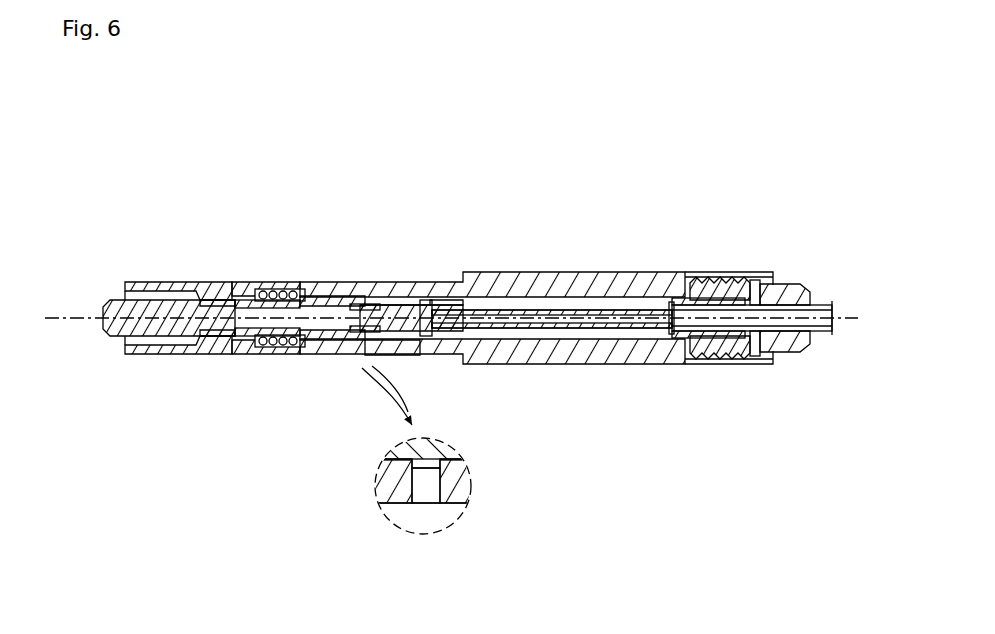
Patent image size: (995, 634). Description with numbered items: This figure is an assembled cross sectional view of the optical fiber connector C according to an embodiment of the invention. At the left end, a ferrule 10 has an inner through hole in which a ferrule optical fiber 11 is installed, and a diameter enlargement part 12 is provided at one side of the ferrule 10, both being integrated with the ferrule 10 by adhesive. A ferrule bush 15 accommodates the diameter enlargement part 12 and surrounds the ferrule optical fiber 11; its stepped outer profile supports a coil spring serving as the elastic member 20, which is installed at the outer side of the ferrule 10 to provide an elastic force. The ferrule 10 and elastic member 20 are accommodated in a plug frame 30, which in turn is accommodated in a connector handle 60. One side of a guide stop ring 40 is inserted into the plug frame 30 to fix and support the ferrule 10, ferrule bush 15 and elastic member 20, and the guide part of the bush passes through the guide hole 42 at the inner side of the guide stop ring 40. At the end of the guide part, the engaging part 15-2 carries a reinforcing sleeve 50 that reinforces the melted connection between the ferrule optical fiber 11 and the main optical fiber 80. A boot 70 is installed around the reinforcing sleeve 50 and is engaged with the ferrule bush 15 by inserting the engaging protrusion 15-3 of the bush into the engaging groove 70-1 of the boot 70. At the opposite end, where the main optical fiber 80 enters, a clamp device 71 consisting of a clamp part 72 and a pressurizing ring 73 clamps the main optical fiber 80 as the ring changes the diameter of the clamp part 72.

The optical fiber connector C is at (98, 186).
The ferrule 10 is at (142, 360).
The ferrule optical fiber 11 is at (418, 301).
The diameter enlargement part 12 is at (233, 355).
The ferrule bush 15 is at (278, 353).
The engaging part 15-2 is at (410, 360).
The engaging protrusion 15-3 is at (458, 500).
The elastic member 20 is at (302, 290).
The plug frame 30 is at (281, 289).
The guide stop ring 40 is at (352, 290).
The guide hole 42 is at (370, 292).
The reinforcing sleeve 50 is at (630, 282).
The connector handle 60 is at (190, 282).
The boot 70 is at (540, 282).
The engaging groove 70-1 is at (423, 497).
The clamp device 71 is at (844, 476).
The clamp part 72 is at (795, 345).
The pressurizing ring 73 is at (760, 262).
The main optical fiber 80 is at (690, 280).